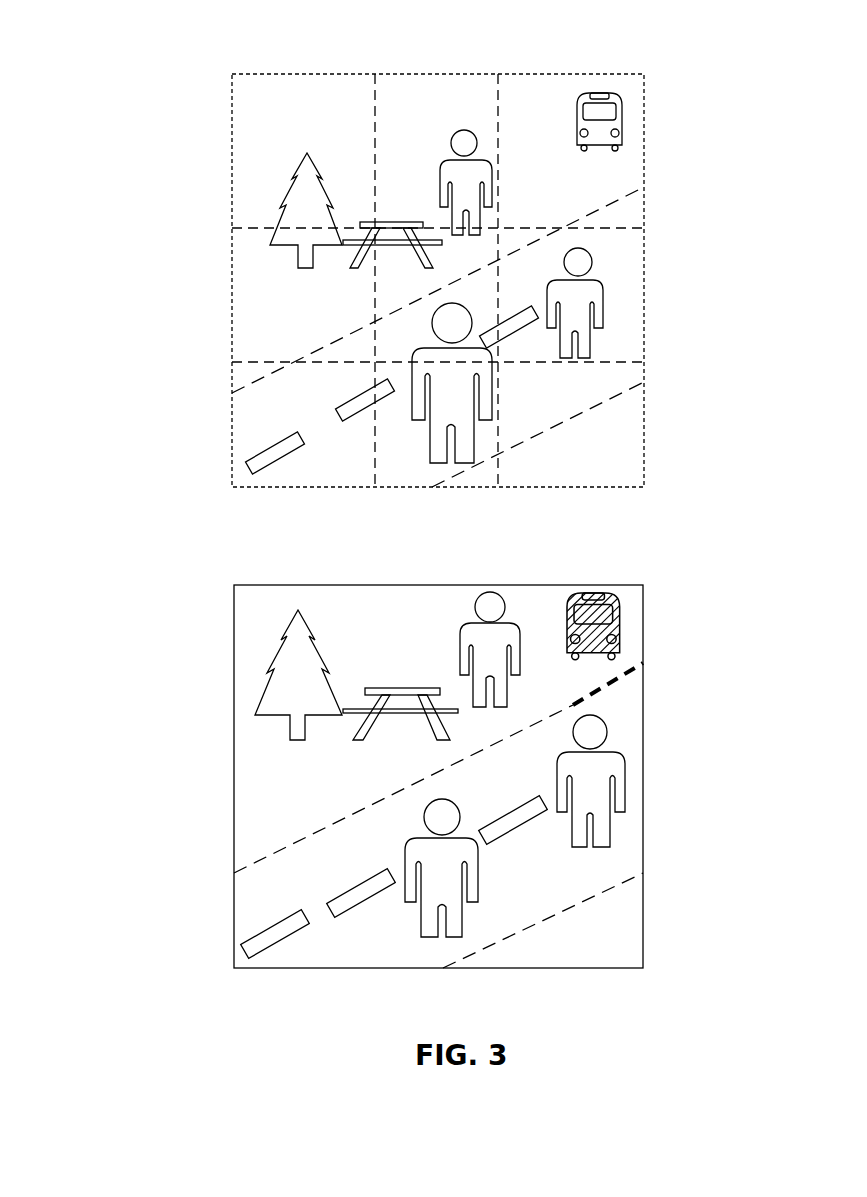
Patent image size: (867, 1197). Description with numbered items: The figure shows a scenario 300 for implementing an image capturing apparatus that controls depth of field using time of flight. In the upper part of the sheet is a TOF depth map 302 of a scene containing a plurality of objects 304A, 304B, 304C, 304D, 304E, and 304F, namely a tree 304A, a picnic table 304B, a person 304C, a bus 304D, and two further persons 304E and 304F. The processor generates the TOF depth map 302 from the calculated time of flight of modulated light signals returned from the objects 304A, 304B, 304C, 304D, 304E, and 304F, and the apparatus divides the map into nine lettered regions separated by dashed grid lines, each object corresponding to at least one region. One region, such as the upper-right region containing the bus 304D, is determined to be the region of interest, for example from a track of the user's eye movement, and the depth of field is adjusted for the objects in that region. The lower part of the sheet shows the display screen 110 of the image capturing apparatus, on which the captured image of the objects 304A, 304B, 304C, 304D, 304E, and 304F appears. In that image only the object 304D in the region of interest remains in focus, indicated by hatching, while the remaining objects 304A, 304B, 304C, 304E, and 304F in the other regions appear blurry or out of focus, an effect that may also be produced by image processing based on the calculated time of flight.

The scenario 300 is at (126, 60).
The TOF depth map 302 is at (232, 188).
The display screen 110 is at (233, 772).
The object 304A is at (317, 175).
The object 304B is at (405, 222).
The object 304C is at (470, 197).
The object 304D is at (605, 130).
The object 304E is at (573, 322).
The object 304F is at (457, 398).